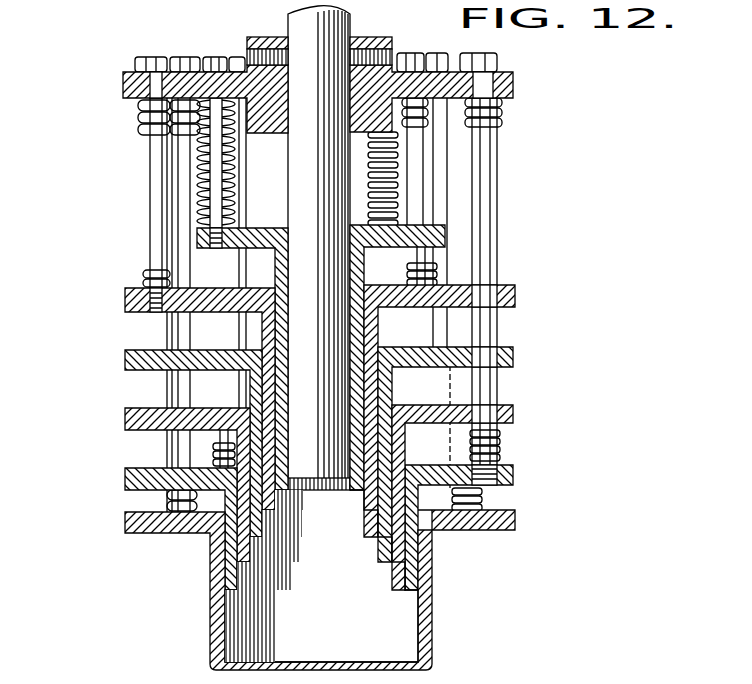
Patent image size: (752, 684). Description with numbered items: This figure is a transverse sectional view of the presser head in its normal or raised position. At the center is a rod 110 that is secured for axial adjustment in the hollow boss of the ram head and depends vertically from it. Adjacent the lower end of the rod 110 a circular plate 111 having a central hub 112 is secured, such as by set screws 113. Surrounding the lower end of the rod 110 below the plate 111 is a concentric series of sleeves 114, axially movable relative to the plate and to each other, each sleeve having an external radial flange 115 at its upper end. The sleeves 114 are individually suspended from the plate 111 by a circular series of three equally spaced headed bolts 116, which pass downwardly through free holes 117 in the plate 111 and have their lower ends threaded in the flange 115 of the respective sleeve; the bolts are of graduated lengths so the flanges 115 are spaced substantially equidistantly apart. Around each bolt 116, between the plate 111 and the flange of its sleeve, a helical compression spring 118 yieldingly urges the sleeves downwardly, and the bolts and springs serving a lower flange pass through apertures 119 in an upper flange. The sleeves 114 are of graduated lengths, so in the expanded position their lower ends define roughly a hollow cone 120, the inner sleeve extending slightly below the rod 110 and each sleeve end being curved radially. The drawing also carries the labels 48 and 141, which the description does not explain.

The rod 110 is at (351, 26).
The circular plate 111 is at (513, 80).
The central hub 112 is at (259, 37).
The set screws 113 is at (392, 46).
The sleeves 114 is at (432, 583).
The external radial flange 115 is at (513, 356).
The headed bolts 116 is at (483, 258).
The free holes 117 is at (150, 88).
The helical compression spring 118 is at (497, 462).
The apertures 119 is at (513, 413).
The hollow cone 120 is at (295, 556).
The spring 48 is at (213, 452).
The seal assembly 141 is at (96, 296).